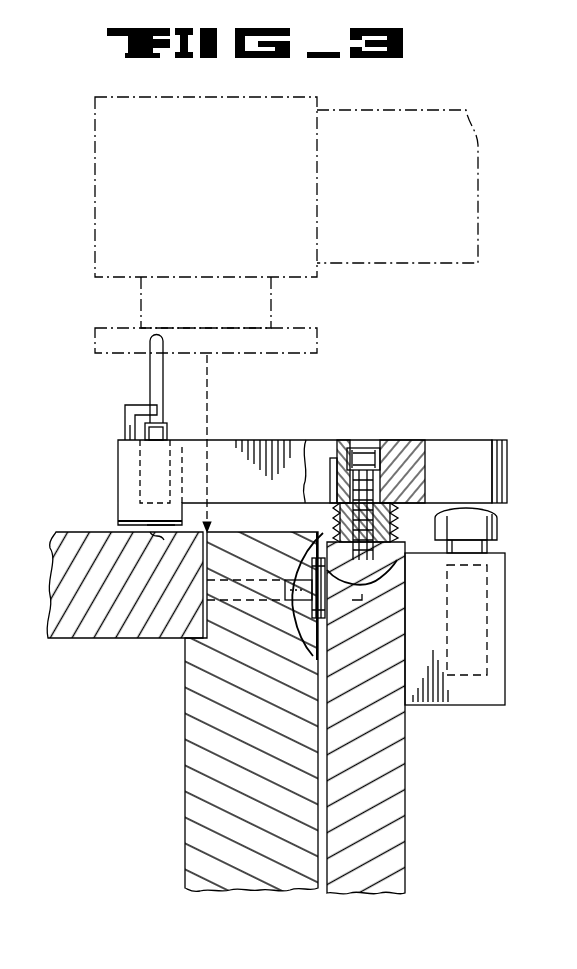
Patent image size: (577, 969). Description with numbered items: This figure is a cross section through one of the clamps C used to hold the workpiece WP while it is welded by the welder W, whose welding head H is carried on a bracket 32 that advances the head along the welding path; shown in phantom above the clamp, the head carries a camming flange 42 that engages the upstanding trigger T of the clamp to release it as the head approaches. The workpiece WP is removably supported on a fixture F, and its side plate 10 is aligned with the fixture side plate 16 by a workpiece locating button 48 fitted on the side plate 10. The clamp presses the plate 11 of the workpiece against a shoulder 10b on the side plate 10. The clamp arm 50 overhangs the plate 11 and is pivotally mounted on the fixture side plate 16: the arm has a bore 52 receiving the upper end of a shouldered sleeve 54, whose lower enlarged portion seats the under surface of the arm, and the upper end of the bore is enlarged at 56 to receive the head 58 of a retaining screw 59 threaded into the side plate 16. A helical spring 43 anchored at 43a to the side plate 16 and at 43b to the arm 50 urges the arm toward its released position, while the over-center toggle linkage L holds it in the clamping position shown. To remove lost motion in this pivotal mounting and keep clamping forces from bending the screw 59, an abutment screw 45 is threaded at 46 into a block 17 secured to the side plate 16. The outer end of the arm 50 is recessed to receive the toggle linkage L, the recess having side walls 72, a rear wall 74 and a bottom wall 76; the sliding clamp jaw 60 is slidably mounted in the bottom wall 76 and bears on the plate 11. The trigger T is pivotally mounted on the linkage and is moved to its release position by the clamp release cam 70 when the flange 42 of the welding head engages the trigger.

The welding head H is at (95, 110).
The welder W is at (392, 107).
The bracket 32 is at (479, 140).
The camming flange 42 is at (305, 330).
The trigger T is at (152, 342).
The clamp release cam 70 is at (125, 406).
The toggle linkage L is at (128, 428).
The side walls 72 is at (118, 462).
The bottom wall 76 is at (150, 503).
The rear wall 74 is at (182, 450).
The spring anchor on clamp arm 43b is at (330, 470).
The clamp arm 50 is at (492, 440).
The enlarged upper end of bore 56 is at (380, 440).
The bore 52 is at (420, 482).
The shouldered sleeve 54 is at (420, 492).
The head of retaining screw 58 is at (355, 448).
The clamp C is at (395, 415).
The helical spring 43 is at (340, 527).
The retaining screw 59 is at (392, 522).
The abutment screw 45 is at (497, 527).
The threaded connection of abutment screw 46 is at (505, 556).
The block 17 is at (500, 584).
The plate 11 is at (66, 535).
The sliding clamp jaw 60 is at (152, 537).
The side plate 10 is at (195, 716).
The shoulder 10b is at (186, 640).
The workpiece WP is at (185, 768).
The workpiece locating button 48 is at (292, 606).
The fixture side plate 16 is at (398, 797).
The fixture F is at (407, 748).
The spring anchor on side plate 43a is at (395, 576).